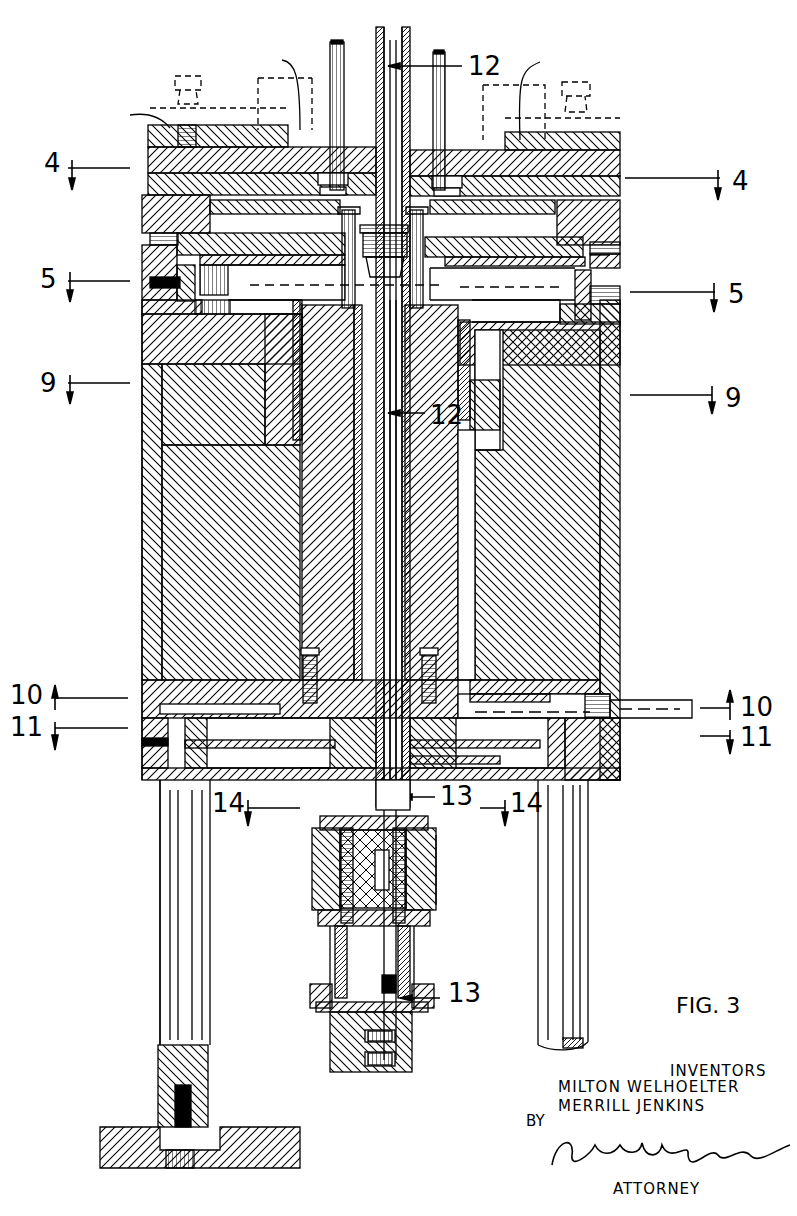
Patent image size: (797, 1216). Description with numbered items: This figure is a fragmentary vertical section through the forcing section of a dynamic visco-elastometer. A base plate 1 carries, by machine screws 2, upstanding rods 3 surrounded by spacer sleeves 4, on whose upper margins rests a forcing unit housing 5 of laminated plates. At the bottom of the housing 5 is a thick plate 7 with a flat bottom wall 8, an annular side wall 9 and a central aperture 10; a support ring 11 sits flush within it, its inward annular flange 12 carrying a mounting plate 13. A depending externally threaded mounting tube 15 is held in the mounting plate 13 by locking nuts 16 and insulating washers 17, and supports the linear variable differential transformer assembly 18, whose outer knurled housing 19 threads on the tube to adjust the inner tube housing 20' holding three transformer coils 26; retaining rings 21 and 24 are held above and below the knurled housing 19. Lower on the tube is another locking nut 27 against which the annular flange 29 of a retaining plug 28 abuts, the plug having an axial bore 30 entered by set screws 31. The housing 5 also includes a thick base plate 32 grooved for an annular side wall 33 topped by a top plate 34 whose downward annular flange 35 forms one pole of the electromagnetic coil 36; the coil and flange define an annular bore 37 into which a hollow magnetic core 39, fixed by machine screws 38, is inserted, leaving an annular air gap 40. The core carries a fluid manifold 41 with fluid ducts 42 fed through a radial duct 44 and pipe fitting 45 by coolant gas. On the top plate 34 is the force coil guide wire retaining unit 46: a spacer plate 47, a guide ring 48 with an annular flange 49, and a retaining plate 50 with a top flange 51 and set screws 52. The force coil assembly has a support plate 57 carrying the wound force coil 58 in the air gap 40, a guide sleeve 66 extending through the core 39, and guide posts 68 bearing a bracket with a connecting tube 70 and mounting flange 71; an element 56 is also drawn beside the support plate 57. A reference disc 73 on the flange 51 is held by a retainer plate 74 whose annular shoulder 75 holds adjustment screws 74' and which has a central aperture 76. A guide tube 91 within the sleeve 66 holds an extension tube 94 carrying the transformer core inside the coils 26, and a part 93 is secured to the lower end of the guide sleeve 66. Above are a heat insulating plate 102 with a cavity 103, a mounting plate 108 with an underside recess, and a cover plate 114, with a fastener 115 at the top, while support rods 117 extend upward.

The base plate 1 is at (300, 1130).
The machine screws 2 is at (185, 1168).
The upstanding rods 3 is at (202, 1068).
The spacer sleeves 4 is at (200, 1025).
The forcing unit housing 5 is at (612, 552).
The thick plate 7 is at (614, 770).
The bottom wall 8 is at (200, 782).
The annular side wall 9 is at (142, 752).
The central aperture 10 is at (330, 790).
The support ring 11 is at (600, 782).
The annular flange 12 is at (545, 742).
The mounting plate 13 is at (505, 760).
The mounting tube 15 is at (330, 1030).
The locking nuts 16 is at (300, 690).
The insulating washers 17 is at (318, 750).
The linear variable differential transformer assembly 18 is at (400, 860).
The outer knurled housing 19 is at (436, 893).
The inner tube housing 20' is at (352, 869).
The retaining ring 21 is at (428, 823).
The retaining ring 24 is at (430, 922).
The transformer coils 26 is at (348, 868).
The locking nut 27 is at (430, 985).
The retaining plug 28 is at (390, 1072).
The annular flange 29 is at (318, 1005).
The axial bore 30 is at (372, 1072).
The set screws 31 is at (395, 1036).
The base plate 32 is at (590, 690).
The annular side wall 33 is at (614, 510).
The top plate 34 is at (620, 356).
The annular flange 35 is at (498, 430).
The electromagnetic coil 36 is at (468, 328).
The annular bore 37 is at (462, 548).
The machine screws 38 is at (440, 678).
The magnetic core 39 is at (448, 595).
The annular air gap 40 is at (290, 452).
The fluid manifold 41 is at (300, 600).
The fluid ducts 42 is at (460, 630).
The radial duct 44 is at (598, 695).
The pipe fitting 45 is at (650, 700).
The force coil guide wire retaining unit 46 is at (605, 258).
The spacer plate 47 is at (620, 324).
The guide ring 48 is at (620, 268).
The annular flange 49 is at (142, 307).
The retaining plate 50 is at (620, 306).
The top flange 51 is at (274, 248).
The set screws 52 is at (148, 280).
The sleeve 56 is at (295, 320).
The support plate 57 is at (265, 305).
The force coil 58 is at (478, 400).
The guide sleeve 66 is at (370, 530).
The guide posts 68 is at (440, 238).
The connecting tube 70 is at (410, 40).
The mounting flange 71 is at (336, 212).
The reference disc 73 is at (432, 241).
The retainer plate 74 is at (404, 220).
The adjustment screws 74' is at (383, 239).
The annular shoulder 75 is at (615, 232).
The central aperture 76 is at (530, 230).
The guide tube 91 is at (385, 500).
The tube lower end 93 is at (376, 795).
The extension tube 94 is at (335, 932).
The heat insulating plate 102 is at (152, 185).
The cavity 103 is at (455, 150).
The mounting plate 108 is at (612, 170).
The cover plate 114 is at (621, 132).
The fastener 115 is at (140, 124).
The support rods 117 is at (338, 44).